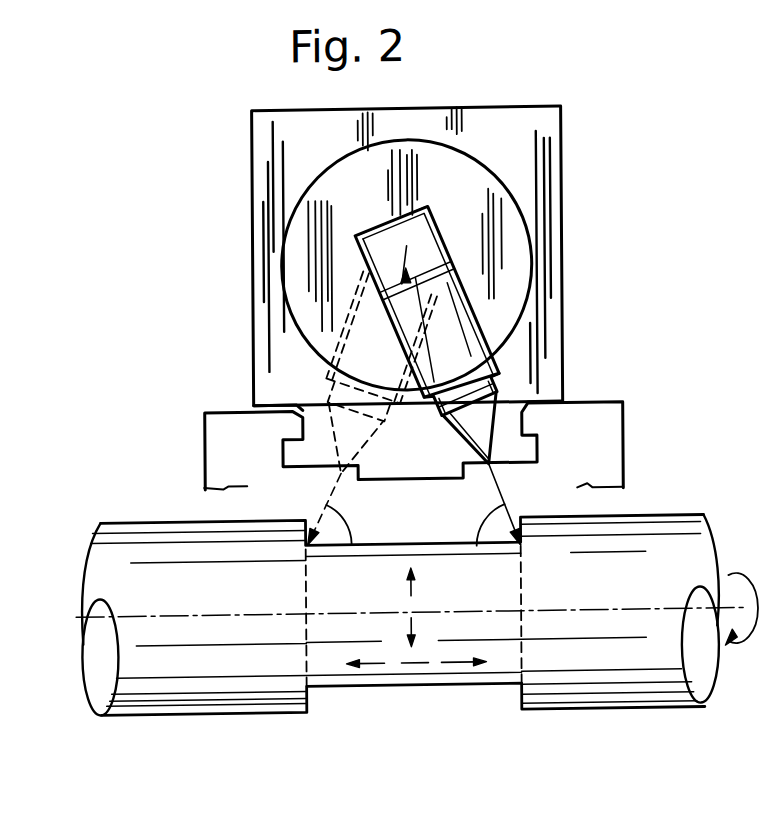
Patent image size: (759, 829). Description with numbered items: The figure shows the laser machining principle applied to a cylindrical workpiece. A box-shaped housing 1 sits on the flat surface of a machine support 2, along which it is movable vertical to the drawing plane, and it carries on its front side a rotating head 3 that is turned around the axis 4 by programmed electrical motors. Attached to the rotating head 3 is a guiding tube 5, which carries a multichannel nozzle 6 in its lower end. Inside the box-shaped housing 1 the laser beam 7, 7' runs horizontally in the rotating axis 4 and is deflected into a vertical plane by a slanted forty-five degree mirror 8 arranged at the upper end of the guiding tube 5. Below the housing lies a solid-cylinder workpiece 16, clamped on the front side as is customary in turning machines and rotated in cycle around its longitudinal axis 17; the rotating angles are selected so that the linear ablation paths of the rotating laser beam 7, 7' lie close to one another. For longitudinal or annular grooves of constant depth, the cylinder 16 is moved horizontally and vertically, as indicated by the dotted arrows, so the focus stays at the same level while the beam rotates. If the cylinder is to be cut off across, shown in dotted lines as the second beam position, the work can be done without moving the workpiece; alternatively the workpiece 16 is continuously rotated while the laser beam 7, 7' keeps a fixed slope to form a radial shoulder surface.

The box-shaped housing 1 is at (538, 132).
The machine support 2 is at (603, 446).
The rotating head 3 is at (505, 218).
The axis 4 is at (419, 262).
The guiding tube 5 is at (494, 368).
The multichannel nozzle 6 is at (500, 414).
The laser beam 7 is at (491, 304).
The laser beam 7' is at (301, 378).
The slanted mirror 8 is at (417, 213).
The solid-cylinder workpiece 16 is at (150, 688).
The longitudinal axis 17 is at (221, 614).